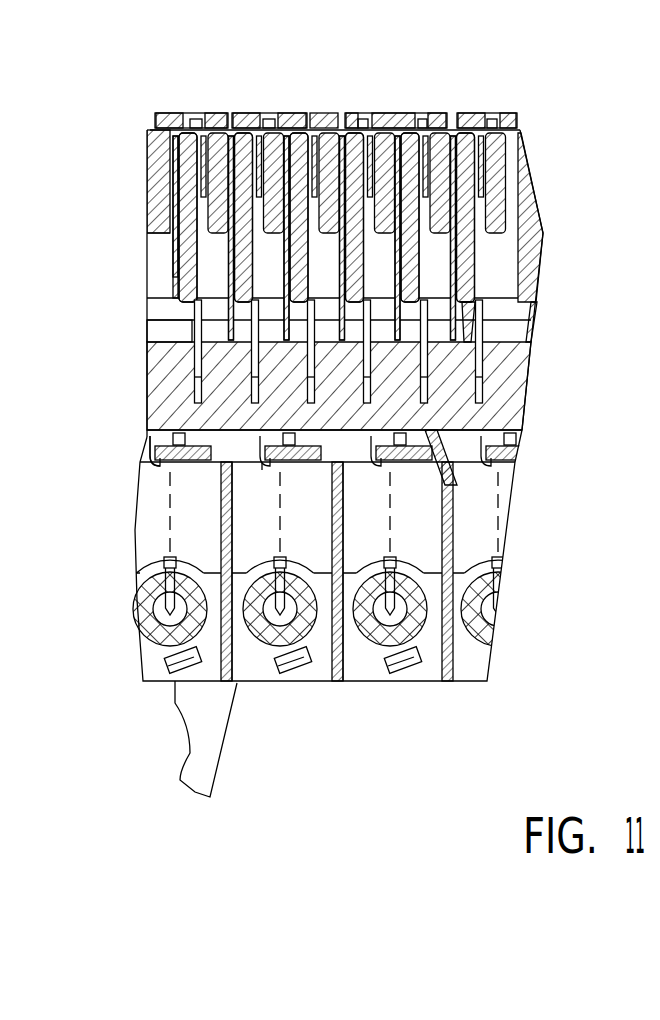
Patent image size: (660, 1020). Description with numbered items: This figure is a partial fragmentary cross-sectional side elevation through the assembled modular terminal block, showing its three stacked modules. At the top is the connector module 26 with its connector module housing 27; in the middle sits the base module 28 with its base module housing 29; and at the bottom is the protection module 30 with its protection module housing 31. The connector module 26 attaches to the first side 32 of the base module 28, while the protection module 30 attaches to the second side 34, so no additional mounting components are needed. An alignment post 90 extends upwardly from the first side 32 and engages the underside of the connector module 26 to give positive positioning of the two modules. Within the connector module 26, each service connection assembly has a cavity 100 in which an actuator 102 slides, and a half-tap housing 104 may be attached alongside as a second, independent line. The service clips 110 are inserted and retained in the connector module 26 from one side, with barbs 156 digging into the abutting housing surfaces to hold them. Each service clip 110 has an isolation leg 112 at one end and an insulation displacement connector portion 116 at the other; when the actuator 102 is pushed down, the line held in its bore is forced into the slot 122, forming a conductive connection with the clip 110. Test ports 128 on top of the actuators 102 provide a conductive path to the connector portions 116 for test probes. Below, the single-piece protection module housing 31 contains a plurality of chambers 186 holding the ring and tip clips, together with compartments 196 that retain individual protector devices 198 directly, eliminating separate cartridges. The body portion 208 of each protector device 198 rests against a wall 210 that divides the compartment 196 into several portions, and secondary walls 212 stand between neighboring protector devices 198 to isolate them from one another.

The connector module 26 is at (320, 234).
The connector module housing 27 is at (172, 262).
The base module 28 is at (284, 367).
The base module housing 29 is at (155, 401).
The protection module 30 is at (319, 623).
The protection module housing 31 is at (147, 478).
The first side 32 is at (168, 327).
The second side 34 is at (237, 477).
The alignment post 90 is at (472, 328).
The cavity 100 is at (432, 125).
The actuator 102 is at (380, 125).
The half-tap housing 104 is at (284, 596).
The service clip 110 is at (320, 135).
The isolation leg 112 is at (490, 222).
The insulation displacement connector portion 116 is at (228, 133).
The slot 122 is at (247, 133).
The test port 128 is at (483, 114).
The barb 156 is at (222, 162).
The chamber 186 is at (458, 441).
The compartment 196 is at (425, 518).
The protector device 198 is at (340, 662).
The body portion 208 is at (263, 655).
The wall 210 is at (237, 683).
The secondary wall 212 is at (335, 653).